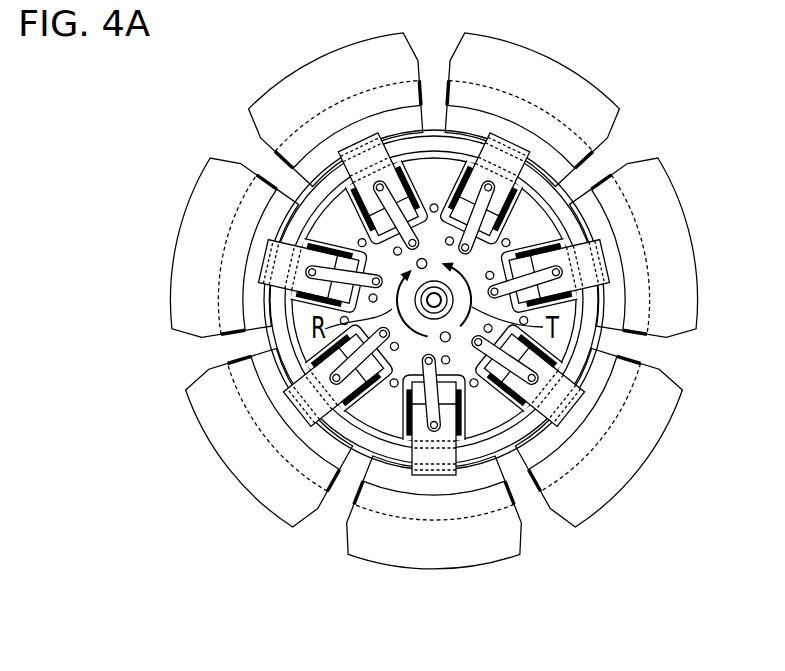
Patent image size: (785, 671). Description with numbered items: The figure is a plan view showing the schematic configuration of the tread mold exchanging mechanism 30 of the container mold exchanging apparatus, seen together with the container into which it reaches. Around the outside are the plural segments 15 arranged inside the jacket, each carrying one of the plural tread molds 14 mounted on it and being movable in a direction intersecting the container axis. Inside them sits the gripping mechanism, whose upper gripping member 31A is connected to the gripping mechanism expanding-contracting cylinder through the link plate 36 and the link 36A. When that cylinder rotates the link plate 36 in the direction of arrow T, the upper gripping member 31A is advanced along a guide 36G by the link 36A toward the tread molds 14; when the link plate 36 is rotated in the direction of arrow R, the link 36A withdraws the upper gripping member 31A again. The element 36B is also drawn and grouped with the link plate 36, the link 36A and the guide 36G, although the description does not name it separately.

The tread mold 14 is at (505, 118).
The segment 15 is at (600, 103).
The tread mold exchanging mechanism 30 is at (594, 338).
The upper gripping member 31A is at (310, 400).
The link plate 36 is at (380, 397).
The link 36A is at (434, 407).
The shoe lever arm 36B is at (431, 392).
The guide 36G is at (434, 428).